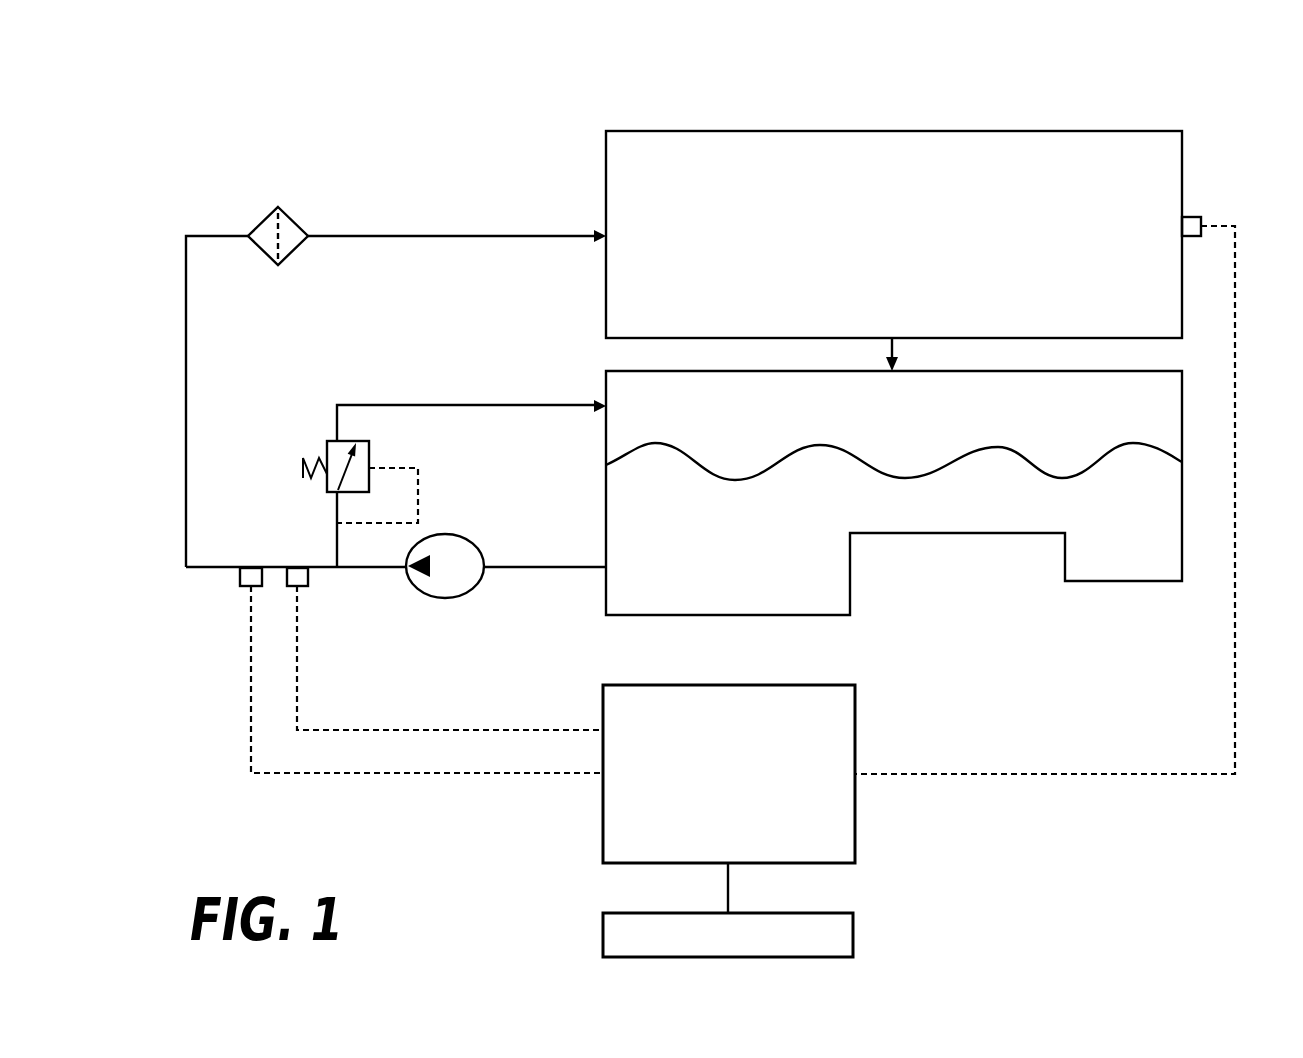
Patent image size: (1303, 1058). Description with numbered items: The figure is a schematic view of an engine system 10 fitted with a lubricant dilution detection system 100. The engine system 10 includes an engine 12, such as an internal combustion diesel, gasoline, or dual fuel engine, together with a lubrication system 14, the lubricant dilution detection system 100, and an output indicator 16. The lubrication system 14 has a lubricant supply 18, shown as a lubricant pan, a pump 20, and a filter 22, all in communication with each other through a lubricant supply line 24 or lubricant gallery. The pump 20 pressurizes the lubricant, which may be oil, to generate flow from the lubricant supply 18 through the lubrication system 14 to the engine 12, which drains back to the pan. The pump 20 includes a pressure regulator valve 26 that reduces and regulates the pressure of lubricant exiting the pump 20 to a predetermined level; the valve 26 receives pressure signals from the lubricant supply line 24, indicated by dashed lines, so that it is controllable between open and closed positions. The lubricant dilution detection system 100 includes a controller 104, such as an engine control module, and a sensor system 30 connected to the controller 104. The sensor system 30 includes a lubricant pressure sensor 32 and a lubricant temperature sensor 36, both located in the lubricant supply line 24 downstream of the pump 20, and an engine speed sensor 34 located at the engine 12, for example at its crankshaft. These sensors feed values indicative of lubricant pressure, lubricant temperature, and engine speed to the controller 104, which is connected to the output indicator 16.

The engine system 10 is at (1174, 98).
The engine 12 is at (886, 131).
The lubrication system 14 is at (333, 370).
The output indicator 16 is at (603, 937).
The lubricant supply 18 is at (1182, 395).
The pump 20 is at (448, 534).
The filter 22 is at (278, 207).
The lubricant supply line 24 is at (186, 510).
The pressure regulator valve 26 is at (340, 446).
The sensor system 30 is at (654, 464).
The lubricant pressure sensor 32 is at (308, 575).
The engine speed sensor 34 is at (1190, 217).
The lubricant temperature sensor 36 is at (240, 575).
The lubricant dilution detection system 100 is at (811, 821).
The controller 104 is at (603, 835).